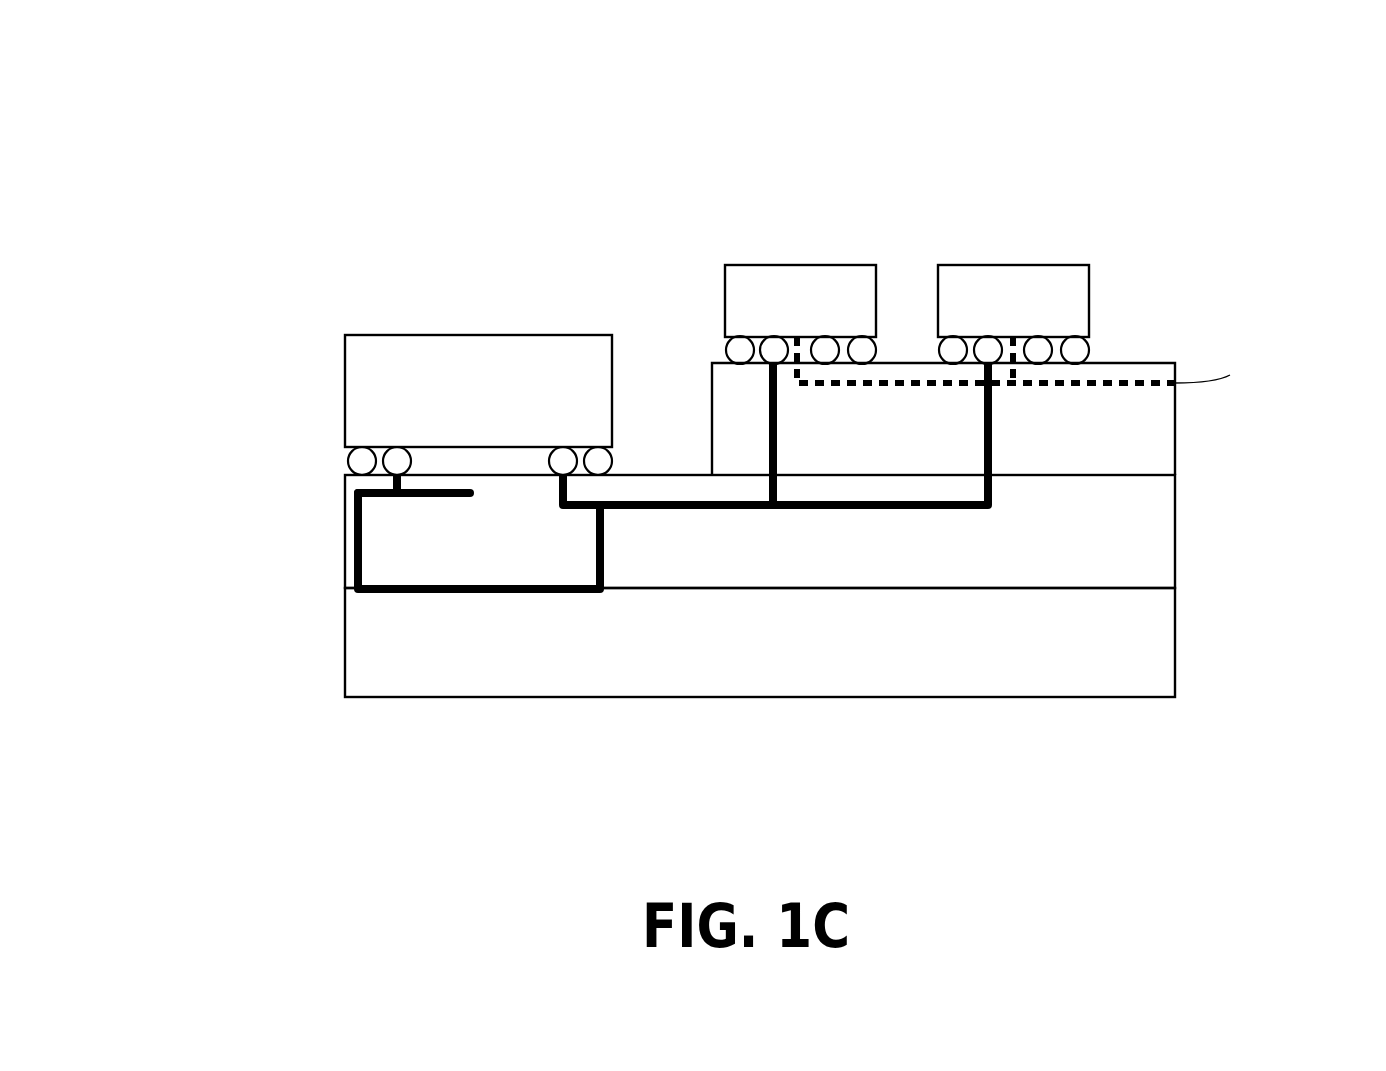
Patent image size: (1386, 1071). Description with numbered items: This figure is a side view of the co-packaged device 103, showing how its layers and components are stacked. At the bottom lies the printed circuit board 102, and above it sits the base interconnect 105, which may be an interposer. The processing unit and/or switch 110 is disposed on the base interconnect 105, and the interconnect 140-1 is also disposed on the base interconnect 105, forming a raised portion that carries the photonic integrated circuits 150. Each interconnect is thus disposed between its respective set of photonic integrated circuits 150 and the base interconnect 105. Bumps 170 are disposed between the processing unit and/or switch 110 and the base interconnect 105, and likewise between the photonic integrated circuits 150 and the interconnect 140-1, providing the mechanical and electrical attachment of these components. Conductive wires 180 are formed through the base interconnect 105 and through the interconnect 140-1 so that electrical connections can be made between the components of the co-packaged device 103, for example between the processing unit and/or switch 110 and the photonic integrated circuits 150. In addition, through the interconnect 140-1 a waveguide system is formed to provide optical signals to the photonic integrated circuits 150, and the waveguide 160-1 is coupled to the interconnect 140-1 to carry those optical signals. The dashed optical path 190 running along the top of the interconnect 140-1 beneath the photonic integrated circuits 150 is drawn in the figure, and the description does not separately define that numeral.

The co-packaged device 103 is at (149, 90).
The printed circuit board 102 is at (760, 642).
The base interconnect 105 is at (1175, 522).
The processing unit and/or switch 110 is at (347, 460).
The interconnect 140-1 is at (708, 410).
The photonic integrated circuit 150 is at (907, 301).
The waveguide 160-1 is at (1238, 352).
The bumps 170 is at (877, 353).
The conductive wires 180 is at (357, 540).
The optical waveguide 190 is at (1112, 382).